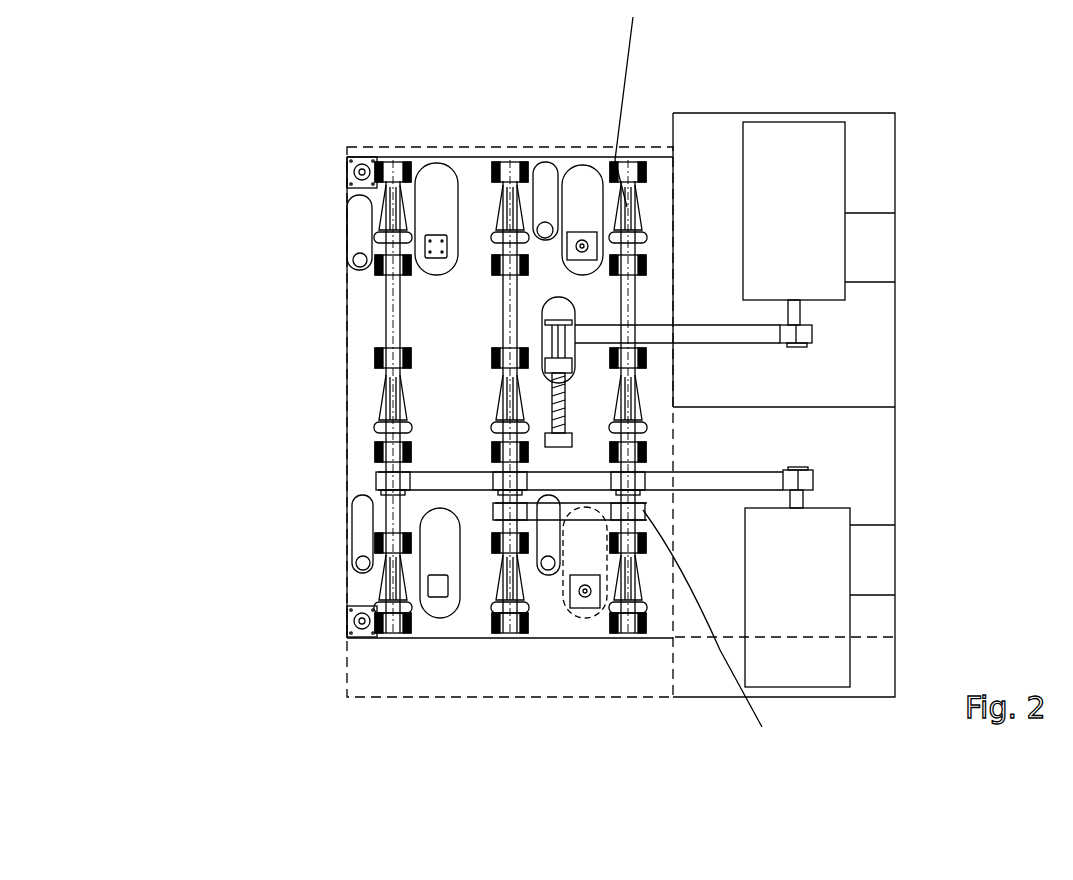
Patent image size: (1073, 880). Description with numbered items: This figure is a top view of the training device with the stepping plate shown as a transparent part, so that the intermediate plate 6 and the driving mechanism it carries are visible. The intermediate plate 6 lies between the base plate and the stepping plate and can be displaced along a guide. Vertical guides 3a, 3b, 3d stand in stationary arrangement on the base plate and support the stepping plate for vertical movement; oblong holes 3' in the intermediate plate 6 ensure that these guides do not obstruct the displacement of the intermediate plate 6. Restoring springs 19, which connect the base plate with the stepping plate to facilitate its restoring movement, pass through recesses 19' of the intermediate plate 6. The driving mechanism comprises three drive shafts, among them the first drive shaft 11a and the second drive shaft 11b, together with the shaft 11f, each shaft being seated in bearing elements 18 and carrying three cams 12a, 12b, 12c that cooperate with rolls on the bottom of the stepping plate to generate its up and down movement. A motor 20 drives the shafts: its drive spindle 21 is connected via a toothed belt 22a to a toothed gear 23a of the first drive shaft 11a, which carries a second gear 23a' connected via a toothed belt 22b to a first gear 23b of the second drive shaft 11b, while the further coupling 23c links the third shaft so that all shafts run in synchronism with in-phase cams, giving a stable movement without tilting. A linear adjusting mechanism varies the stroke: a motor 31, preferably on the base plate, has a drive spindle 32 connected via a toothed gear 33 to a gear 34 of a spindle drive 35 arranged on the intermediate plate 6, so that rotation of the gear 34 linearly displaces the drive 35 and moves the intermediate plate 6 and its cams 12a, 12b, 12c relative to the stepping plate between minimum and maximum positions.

The vertical guide 3a is at (430, 593).
The vertical guide 3b is at (588, 613).
The vertical guide 3d is at (435, 235).
The oblong hole 3' is at (444, 172).
The intermediate plate 6 is at (355, 325).
The first drive shaft 11a is at (633, 603).
The second drive shaft 11b is at (517, 637).
The shaft 11f is at (400, 637).
The cam 12a is at (390, 590).
The cam 12b is at (375, 403).
The cam 12c is at (508, 203).
The bearing element 18 is at (412, 358).
The restoring spring 19 is at (574, 383).
The recess 19' is at (548, 427).
The motor 20 is at (803, 603).
The drive spindle 21 is at (800, 480).
The toothed belt 22a is at (707, 480).
The toothed belt 22b is at (445, 493).
The toothed gear 23a is at (600, 477).
The second gear 23a' is at (723, 636).
The first gear 23b is at (443, 480).
The coupling element 23c is at (507, 473).
The motor 31 is at (810, 228).
The drive spindle 32 is at (797, 315).
The toothed gear 33 is at (727, 333).
The gear 34 is at (573, 320).
The spindle drive 35 is at (575, 395).